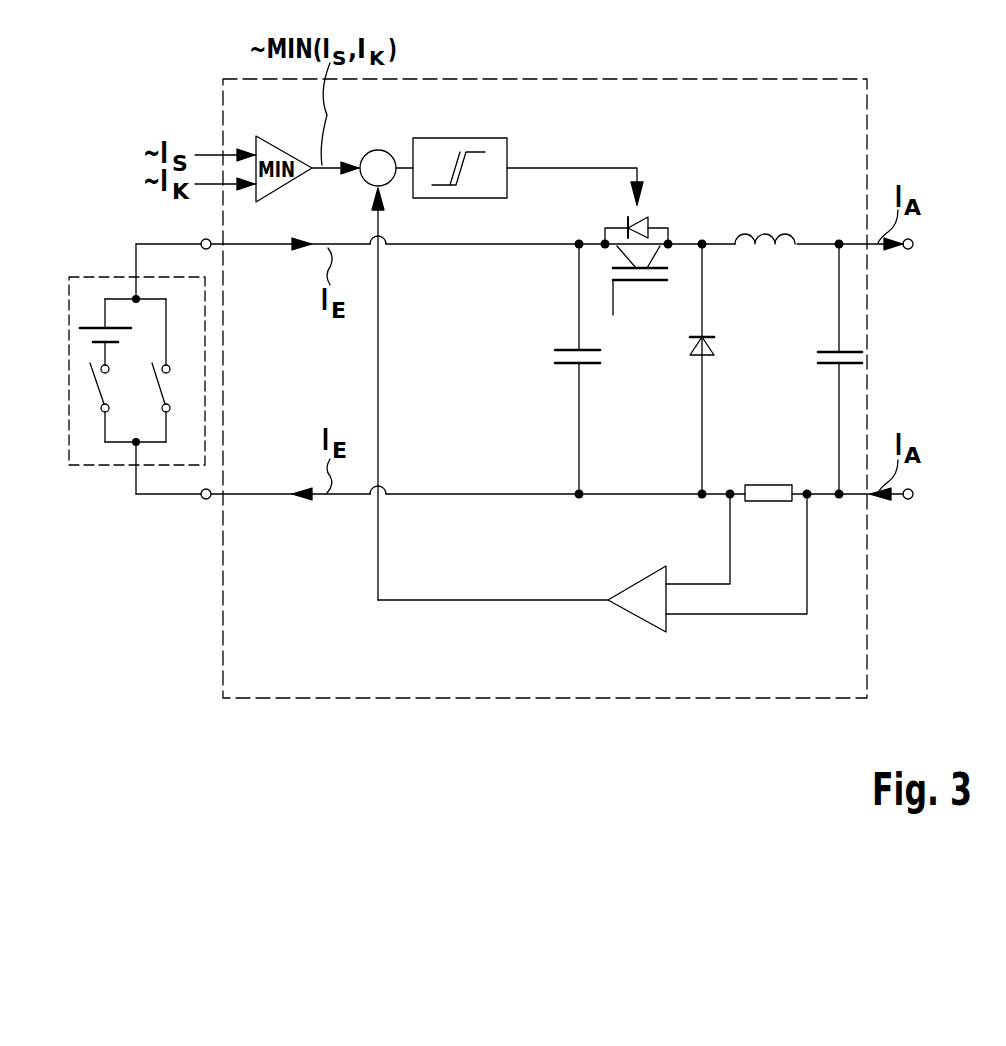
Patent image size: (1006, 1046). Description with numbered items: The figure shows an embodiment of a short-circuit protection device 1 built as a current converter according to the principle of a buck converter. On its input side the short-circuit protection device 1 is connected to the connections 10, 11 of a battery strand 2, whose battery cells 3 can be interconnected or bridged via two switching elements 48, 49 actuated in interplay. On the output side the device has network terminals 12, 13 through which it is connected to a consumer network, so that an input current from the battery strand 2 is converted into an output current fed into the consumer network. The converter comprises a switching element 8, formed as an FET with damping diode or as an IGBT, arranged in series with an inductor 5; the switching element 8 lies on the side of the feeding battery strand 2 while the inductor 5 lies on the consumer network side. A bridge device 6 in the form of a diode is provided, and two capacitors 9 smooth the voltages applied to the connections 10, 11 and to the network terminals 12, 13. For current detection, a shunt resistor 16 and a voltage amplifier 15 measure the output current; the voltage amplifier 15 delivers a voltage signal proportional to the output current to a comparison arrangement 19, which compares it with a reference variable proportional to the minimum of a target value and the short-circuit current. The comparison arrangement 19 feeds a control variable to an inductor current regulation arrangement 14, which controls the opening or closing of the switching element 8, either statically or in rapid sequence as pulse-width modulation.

The short-circuit protection device 1 is at (725, 78).
The battery strand 2 is at (103, 468).
The battery cells 3 is at (88, 338).
The switching element 48 is at (90, 385).
The switching element 49 is at (160, 377).
The connection 10 is at (202, 242).
The connection 11 is at (205, 500).
The network terminal 12 is at (914, 243).
The network terminal 13 is at (914, 493).
The comparison arrangement 19 is at (378, 150).
The inductor current regulation arrangement 14 is at (465, 138).
The switching element 8 is at (660, 220).
The inductor 5 is at (782, 234).
The capacitors 9 is at (553, 356).
The bridge device 6 is at (690, 347).
The shunt resistor 16 is at (767, 484).
The voltage amplifier 15 is at (632, 580).